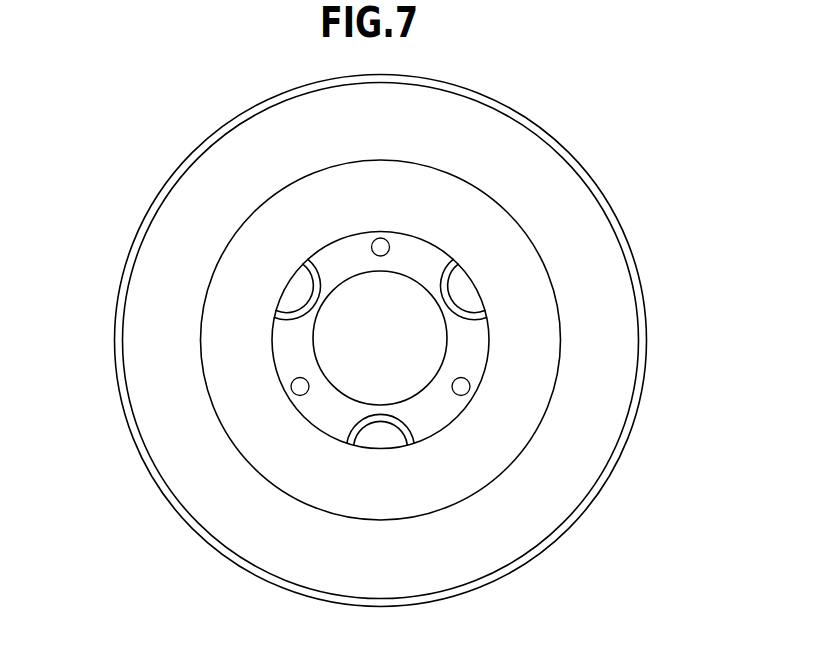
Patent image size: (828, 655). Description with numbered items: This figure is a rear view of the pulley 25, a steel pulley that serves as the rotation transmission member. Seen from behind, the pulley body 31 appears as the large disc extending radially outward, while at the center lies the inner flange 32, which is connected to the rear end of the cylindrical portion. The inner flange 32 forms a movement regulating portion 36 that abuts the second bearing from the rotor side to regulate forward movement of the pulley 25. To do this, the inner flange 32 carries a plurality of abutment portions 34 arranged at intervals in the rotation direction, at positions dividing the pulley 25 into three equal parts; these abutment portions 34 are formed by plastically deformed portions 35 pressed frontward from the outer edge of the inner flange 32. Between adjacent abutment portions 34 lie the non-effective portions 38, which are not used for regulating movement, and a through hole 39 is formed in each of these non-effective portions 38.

The pulley 25 is at (567, 150).
The pulley body 31 is at (503, 238).
The inner flange 32 is at (339, 285).
The movement regulating portion 36 is at (380, 338).
The abutment portion 34 is at (295, 292).
The plastically deformed portion 35 is at (384, 399).
The non-effective portion 38 is at (340, 253).
The through hole 39 is at (375, 243).